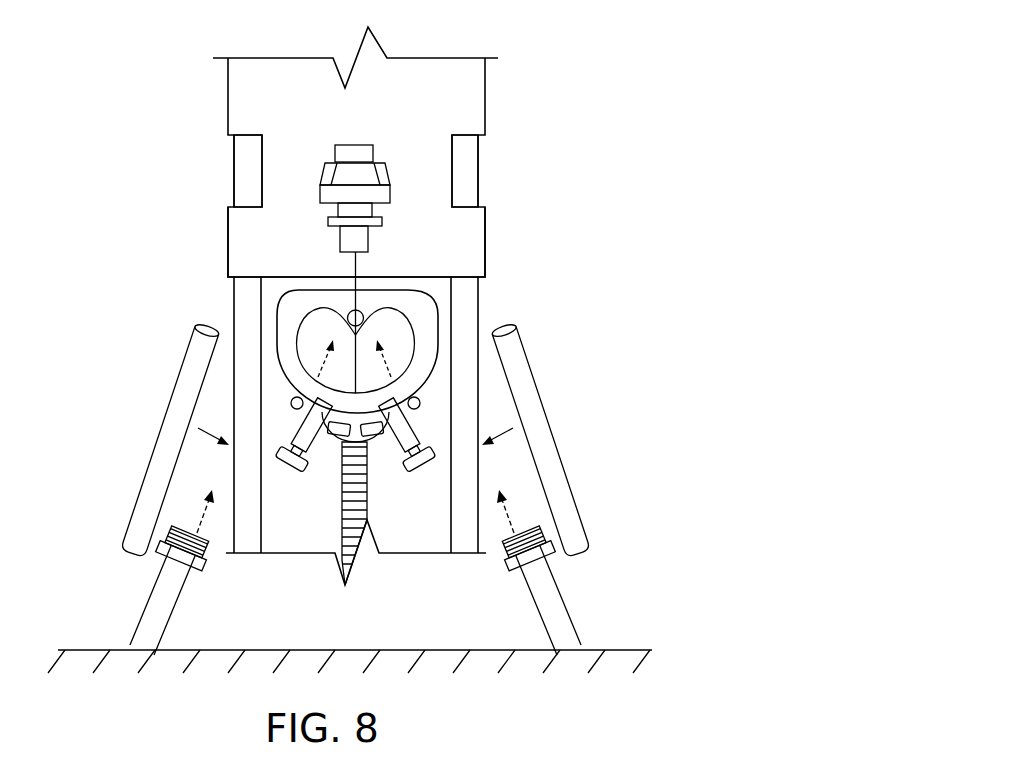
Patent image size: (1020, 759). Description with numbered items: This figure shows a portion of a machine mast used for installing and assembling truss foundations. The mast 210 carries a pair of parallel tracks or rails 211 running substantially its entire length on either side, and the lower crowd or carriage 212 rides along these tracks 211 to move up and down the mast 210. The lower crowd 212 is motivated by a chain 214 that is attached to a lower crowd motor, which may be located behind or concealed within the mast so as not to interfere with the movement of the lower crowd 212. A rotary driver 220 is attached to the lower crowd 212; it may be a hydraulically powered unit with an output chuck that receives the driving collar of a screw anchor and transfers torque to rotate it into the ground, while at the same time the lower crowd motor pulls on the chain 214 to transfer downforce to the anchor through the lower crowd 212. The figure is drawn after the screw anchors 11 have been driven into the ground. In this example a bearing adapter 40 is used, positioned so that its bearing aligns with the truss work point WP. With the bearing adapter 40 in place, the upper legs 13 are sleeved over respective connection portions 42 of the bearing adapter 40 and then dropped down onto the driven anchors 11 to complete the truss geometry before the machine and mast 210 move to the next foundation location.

The mast 210 is at (620, 50).
The tracks or rails 211 is at (249, 172).
The lower crowd or carriage 212 is at (486, 250).
The rotary driver 220 is at (366, 145).
The bearing adapter 40 is at (410, 318).
The connection portions 42 is at (292, 476).
The chain 214 is at (367, 505).
The upper legs 13 is at (157, 427).
The screw anchors 11 is at (153, 598).
The workpiece plane WP is at (486, 182).